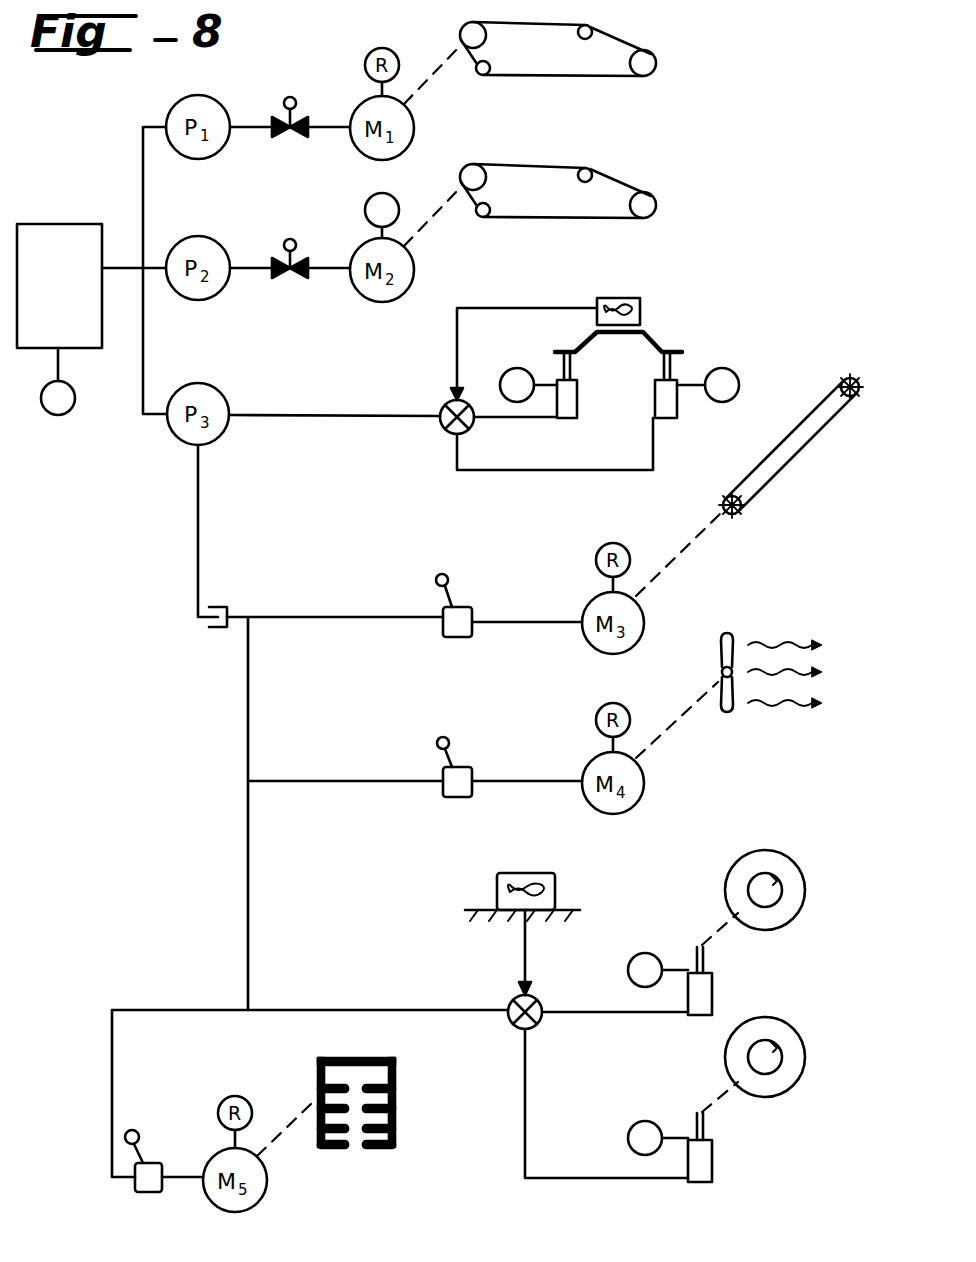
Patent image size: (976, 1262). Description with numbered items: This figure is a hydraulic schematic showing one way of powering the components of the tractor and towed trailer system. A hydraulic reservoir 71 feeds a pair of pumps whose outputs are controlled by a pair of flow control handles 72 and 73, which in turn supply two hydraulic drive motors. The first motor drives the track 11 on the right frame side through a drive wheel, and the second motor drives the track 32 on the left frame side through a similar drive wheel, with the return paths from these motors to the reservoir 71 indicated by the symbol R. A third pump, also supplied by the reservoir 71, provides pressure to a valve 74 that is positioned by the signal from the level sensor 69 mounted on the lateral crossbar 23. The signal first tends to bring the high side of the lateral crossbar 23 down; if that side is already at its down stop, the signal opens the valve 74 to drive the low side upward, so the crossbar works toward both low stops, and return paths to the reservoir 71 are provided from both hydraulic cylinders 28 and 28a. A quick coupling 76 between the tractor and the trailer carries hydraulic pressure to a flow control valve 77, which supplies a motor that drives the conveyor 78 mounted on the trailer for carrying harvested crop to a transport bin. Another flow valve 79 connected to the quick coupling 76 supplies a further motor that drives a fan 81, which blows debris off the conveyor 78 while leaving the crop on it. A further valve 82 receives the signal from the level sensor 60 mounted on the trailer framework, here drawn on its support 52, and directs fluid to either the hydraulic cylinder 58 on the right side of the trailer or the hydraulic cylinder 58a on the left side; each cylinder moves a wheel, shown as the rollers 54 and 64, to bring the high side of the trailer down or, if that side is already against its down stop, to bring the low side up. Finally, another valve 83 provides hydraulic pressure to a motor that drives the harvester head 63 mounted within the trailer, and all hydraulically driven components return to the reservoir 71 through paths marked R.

The track 11 is at (632, 45).
The track 32 is at (622, 178).
The hydraulic reservoir 71 is at (52, 224).
The flow control handle 72 is at (290, 97).
The flow control handle 73 is at (288, 240).
The valve 74 is at (445, 428).
The level sensor 69 is at (623, 298).
The lateral crossbar 23 is at (672, 345).
The hydraulic cylinder 28 is at (578, 402).
The hydraulic cylinder 28a is at (678, 406).
The quick coupling 76 is at (218, 605).
The flow control valve 77 is at (468, 606).
The conveyor 78 is at (787, 470).
The flow valve 79 is at (466, 765).
The fan 81 is at (722, 668).
The level sensor 60 is at (548, 873).
The support 52 is at (570, 908).
The valve 82 is at (515, 1027).
The hydraulic cylinder 58 is at (714, 995).
The hydraulic cylinder 58a is at (714, 1160).
The roller 54 is at (775, 851).
The roller 64 is at (797, 1028).
The valve 83 is at (150, 1193).
The harvester head 63 is at (318, 1078).